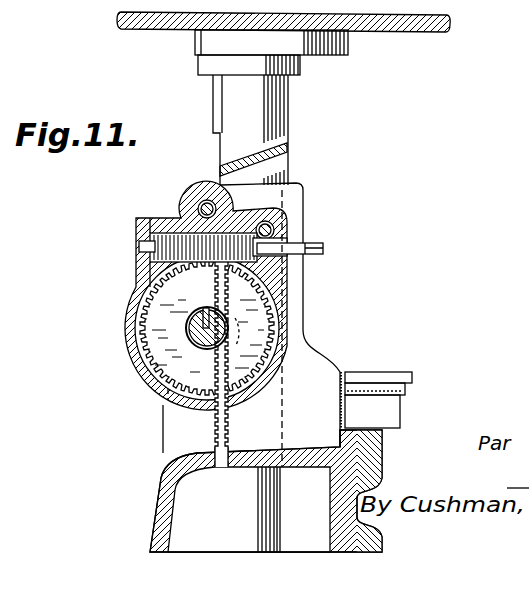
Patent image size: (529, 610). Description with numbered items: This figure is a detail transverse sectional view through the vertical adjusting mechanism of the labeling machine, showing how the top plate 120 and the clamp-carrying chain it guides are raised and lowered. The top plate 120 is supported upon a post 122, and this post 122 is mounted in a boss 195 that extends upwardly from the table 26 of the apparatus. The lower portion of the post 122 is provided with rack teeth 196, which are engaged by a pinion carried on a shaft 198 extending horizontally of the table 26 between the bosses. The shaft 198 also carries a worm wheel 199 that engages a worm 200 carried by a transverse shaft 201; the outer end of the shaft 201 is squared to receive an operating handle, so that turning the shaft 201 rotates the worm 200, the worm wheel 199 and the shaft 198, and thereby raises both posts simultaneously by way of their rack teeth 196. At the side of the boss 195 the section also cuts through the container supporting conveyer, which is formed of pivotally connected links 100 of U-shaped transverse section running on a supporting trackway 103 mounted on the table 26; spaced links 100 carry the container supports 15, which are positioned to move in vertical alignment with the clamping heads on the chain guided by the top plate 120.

The top plate 120 is at (167, 24).
The post 122 is at (225, 98).
The boss 195 is at (297, 288).
The worm wheel 199 is at (290, 354).
The shaft 198 is at (190, 333).
The worm 200 is at (150, 248).
The transverse shaft 201 is at (326, 243).
The rack teeth 196 is at (217, 483).
The table structure 26 is at (163, 509).
The supporting trackway 103 is at (378, 438).
The links 100 is at (392, 386).
The container supports 15 is at (402, 367).